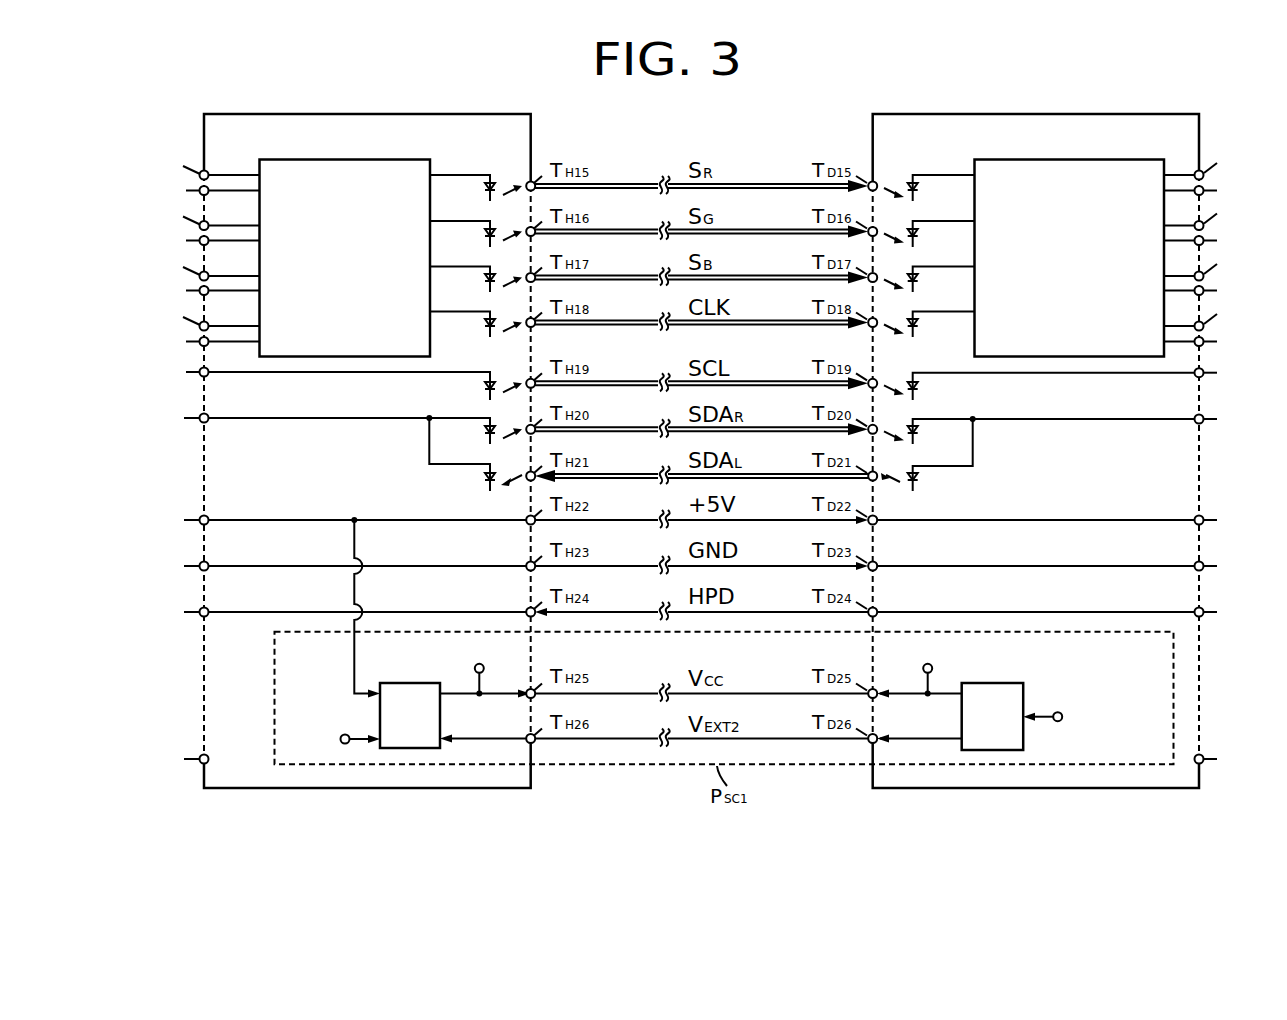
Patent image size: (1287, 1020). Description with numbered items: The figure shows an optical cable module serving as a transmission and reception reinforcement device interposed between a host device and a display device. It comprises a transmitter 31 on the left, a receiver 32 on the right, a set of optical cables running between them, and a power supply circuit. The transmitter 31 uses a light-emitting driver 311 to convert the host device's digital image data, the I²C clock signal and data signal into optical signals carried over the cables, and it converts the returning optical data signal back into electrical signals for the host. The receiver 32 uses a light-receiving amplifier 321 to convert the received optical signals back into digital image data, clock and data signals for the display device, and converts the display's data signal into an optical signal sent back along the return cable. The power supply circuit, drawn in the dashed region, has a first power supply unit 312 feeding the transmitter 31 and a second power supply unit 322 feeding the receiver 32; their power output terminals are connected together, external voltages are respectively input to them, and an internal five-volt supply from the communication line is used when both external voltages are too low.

The transmitter 31 is at (403, 114).
The receiver 32 is at (1067, 114).
The light-emitting driver 311 is at (368, 160).
The light-receiving amplifier 321 is at (1052, 160).
The first power supply unit 312 is at (430, 729).
The second power supply unit 322 is at (1013, 729).